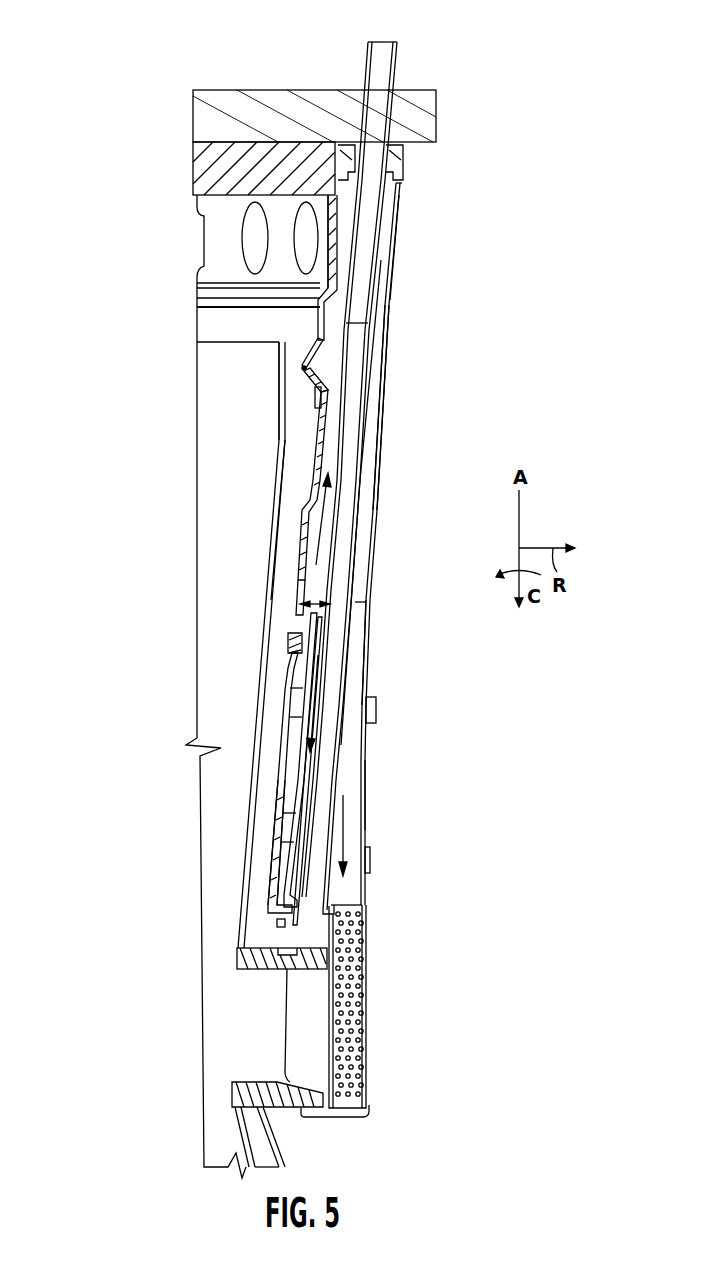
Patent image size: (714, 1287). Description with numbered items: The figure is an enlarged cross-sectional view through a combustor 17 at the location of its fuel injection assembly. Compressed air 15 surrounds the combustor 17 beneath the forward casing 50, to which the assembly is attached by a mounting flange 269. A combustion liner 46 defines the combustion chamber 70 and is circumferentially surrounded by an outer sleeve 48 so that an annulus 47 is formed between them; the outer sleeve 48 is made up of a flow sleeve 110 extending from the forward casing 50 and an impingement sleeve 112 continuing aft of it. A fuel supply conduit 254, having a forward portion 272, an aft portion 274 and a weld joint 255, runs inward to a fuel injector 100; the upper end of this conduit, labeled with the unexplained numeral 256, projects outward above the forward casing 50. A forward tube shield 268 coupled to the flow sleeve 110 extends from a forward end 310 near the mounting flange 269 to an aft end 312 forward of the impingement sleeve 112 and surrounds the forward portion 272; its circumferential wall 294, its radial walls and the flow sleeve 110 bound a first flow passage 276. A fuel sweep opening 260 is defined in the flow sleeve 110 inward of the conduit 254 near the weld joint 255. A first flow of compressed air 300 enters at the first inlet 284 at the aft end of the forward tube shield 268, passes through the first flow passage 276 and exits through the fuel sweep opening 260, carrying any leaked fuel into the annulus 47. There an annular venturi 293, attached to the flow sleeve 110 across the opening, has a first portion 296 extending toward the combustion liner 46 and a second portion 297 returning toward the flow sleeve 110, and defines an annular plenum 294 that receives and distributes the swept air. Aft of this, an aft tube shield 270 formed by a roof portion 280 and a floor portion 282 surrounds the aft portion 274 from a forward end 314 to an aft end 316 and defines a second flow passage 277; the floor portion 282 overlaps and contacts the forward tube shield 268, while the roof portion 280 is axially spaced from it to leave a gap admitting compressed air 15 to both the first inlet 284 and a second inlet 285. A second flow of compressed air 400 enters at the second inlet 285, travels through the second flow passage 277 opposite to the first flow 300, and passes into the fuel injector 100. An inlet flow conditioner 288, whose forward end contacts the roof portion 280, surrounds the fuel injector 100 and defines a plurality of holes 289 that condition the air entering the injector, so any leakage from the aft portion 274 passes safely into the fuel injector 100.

The combustor 17 is at (86, 120).
The forward casing 50 is at (430, 116).
The compressed air 15 is at (343, 282).
The mounting flange 269 is at (403, 158).
The tube 256 is at (384, 42).
The forward end of forward tube shield 310 is at (399, 188).
The circumferential wall 294 is at (393, 222).
The first portion of annular venturi 296 is at (316, 342).
The annular venturi 293 is at (301, 368).
The second portion of annular venturi 297 is at (307, 375).
The flow sleeve 110 is at (318, 452).
The outer sleeve 48 is at (283, 505).
The combustion liner 46 is at (284, 520).
The annulus 47 is at (276, 567).
The first flow of compressed air 300 is at (323, 515).
The second inlet 285 is at (330, 600).
The first inlet 284 is at (300, 605).
The combustion chamber 70 is at (244, 696).
The second flow of compressed air 400 is at (302, 716).
The impingement sleeve 112 is at (300, 784).
The floor portion 282 is at (292, 820).
The weld joint 255 is at (349, 325).
The fuel sweep opening 260 is at (332, 360).
The first flow passage 276 is at (382, 407).
The forward tube shield 268 is at (383, 464).
The fuel supply conduit 254 is at (358, 531).
The forward portion of fuel supply conduit 272 is at (362, 531).
The aft portion of fuel supply conduit 274 is at (345, 745).
The forward end of aft tube shield 314 is at (363, 602).
The aft end of forward tube shield 312 is at (371, 620).
The second flow passage 277 is at (366, 676).
The aft tube shield 270 is at (366, 768).
The roof portion 280 is at (367, 822).
The aft end of aft tube shield 316 is at (363, 905).
The inlet flow conditioner 288 is at (379, 1006).
The holes 289 is at (346, 990).
The fuel injector 100 is at (355, 1113).